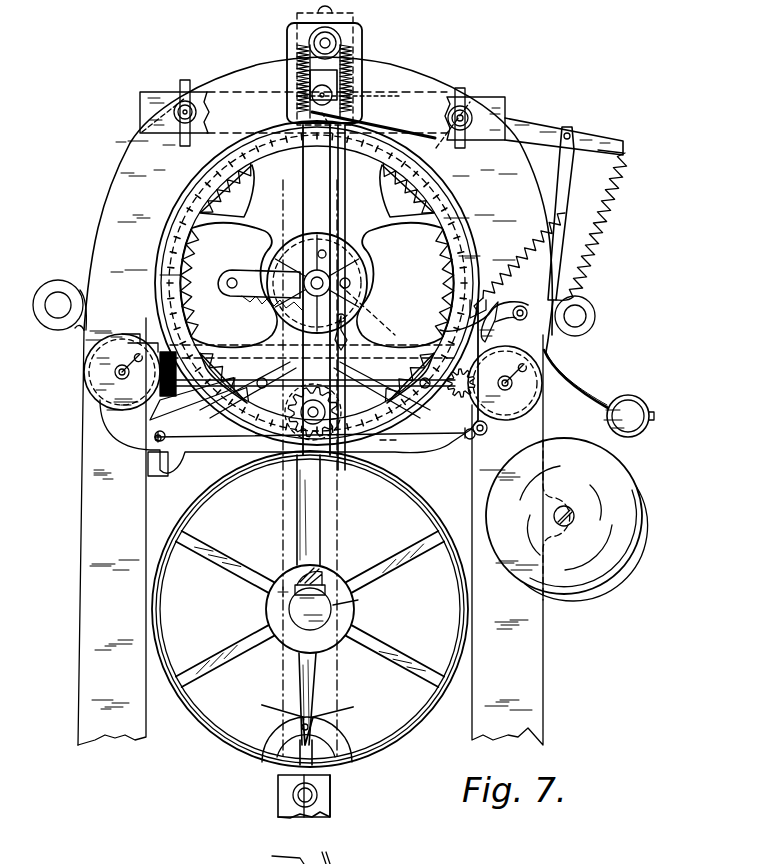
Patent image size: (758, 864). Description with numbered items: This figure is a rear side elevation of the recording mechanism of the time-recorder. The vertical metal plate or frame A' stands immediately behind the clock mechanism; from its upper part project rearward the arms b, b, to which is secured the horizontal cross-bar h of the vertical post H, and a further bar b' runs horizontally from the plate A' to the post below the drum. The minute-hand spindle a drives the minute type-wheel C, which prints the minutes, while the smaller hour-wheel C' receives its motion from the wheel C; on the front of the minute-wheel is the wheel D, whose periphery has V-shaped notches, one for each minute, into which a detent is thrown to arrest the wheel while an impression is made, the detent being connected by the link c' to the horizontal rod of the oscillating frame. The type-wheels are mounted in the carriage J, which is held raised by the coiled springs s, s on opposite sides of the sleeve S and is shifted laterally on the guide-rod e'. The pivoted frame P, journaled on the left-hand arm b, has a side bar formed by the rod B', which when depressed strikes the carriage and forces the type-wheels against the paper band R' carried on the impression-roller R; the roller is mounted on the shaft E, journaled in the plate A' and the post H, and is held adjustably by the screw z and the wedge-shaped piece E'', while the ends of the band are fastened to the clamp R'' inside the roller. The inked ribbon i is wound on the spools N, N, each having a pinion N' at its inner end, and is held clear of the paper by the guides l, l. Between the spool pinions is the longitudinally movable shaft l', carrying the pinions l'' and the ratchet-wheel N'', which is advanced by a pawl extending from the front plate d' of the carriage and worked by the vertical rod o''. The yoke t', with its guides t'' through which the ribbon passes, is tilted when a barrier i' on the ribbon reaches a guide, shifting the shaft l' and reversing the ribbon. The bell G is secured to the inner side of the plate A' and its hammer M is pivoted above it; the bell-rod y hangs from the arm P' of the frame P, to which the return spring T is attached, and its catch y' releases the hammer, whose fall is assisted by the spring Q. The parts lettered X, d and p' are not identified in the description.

The vertical metal plate or frame A' is at (314, 401).
The minute type-wheel C is at (319, 283).
The notched wheel D is at (450, 276).
The hub wheel X is at (362, 300).
The link c' is at (257, 309).
The pendulum bar d is at (310, 442).
The carriage J is at (345, 196).
The vertical rod o'' is at (339, 235).
The minute-hand spindle a is at (346, 308).
The pinion p' is at (321, 411).
The hour-wheel C' is at (312, 381).
The yoke t' is at (343, 392).
The guides l is at (310, 432).
The pinions l'' is at (192, 399).
The guides t'' is at (304, 437).
The front plate of the carriage d' is at (289, 390).
The guide-rod e' is at (158, 473).
The inked ribbon i is at (275, 454).
The barrier i' is at (486, 432).
The pinion N' is at (114, 372).
The ratchet-wheel N'' is at (267, 318).
The spools N is at (500, 361).
The bell-hammer M is at (629, 407).
The bell-rod y is at (566, 239).
The catch y' is at (576, 379).
The coiled spring T is at (598, 230).
The spring Q is at (540, 238).
The sleeve S is at (355, 18).
The vertical post H is at (296, 19).
The coiled springs s is at (292, 58).
The rod B' is at (348, 98).
The horizontal cross-bar h is at (160, 100).
The arms b is at (313, 124).
The oscillating frame P is at (415, 109).
The arm P' is at (609, 129).
The bell G is at (567, 519).
The impression-roller R is at (310, 609).
The paper band R' is at (310, 609).
The shaft E is at (289, 600).
The wedge-shaped piece E'' is at (361, 604).
The screw z is at (328, 578).
The clamp R'' is at (296, 735).
The arm or bar b' is at (274, 797).
The shaft l' is at (291, 856).